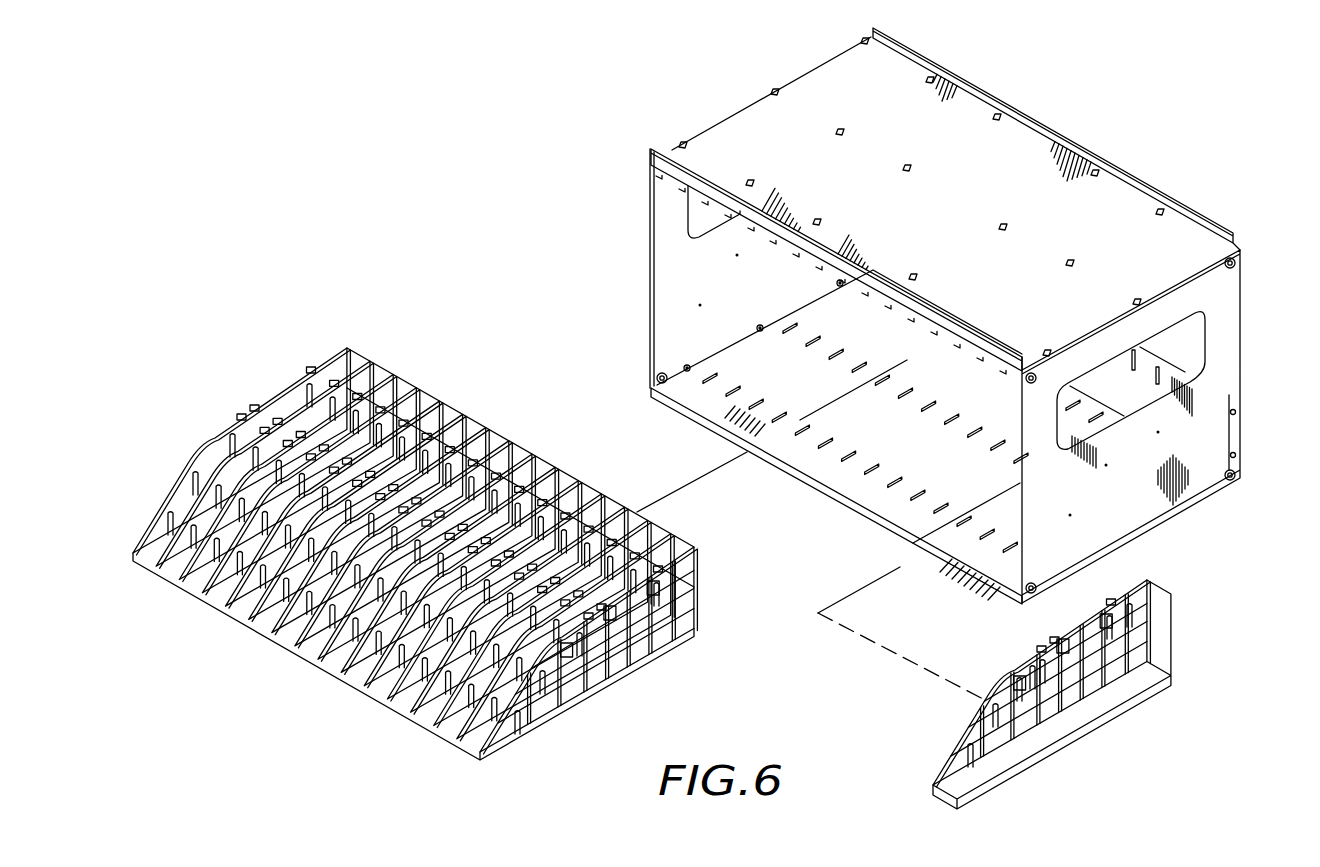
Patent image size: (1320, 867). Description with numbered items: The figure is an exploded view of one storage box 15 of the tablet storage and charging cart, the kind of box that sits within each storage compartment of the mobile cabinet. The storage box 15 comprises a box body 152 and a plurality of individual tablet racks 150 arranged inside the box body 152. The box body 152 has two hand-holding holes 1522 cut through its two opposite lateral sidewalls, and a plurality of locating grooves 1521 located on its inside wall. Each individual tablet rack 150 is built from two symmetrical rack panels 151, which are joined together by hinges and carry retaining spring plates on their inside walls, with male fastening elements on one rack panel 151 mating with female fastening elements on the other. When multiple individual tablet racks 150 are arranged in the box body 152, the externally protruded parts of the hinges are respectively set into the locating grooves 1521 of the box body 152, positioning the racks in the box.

The storage box 15 is at (266, 651).
The individual tablet rack 150 is at (1019, 694).
The rack panel 151 is at (978, 731).
The box body 152 is at (978, 316).
The locating grooves 1521 is at (925, 492).
The hand-holding holes 1522 is at (1206, 331).